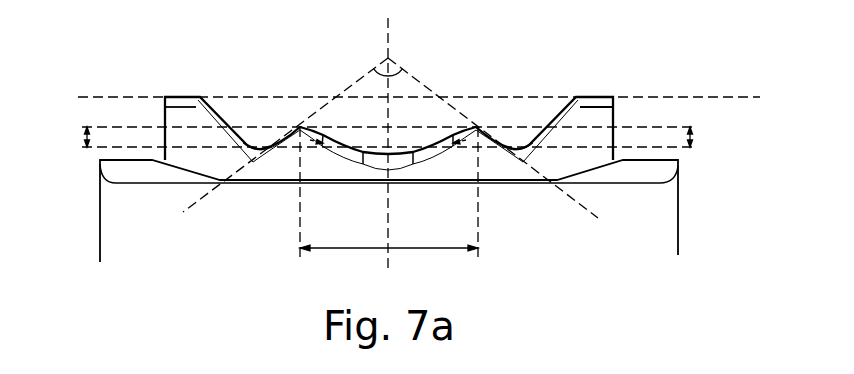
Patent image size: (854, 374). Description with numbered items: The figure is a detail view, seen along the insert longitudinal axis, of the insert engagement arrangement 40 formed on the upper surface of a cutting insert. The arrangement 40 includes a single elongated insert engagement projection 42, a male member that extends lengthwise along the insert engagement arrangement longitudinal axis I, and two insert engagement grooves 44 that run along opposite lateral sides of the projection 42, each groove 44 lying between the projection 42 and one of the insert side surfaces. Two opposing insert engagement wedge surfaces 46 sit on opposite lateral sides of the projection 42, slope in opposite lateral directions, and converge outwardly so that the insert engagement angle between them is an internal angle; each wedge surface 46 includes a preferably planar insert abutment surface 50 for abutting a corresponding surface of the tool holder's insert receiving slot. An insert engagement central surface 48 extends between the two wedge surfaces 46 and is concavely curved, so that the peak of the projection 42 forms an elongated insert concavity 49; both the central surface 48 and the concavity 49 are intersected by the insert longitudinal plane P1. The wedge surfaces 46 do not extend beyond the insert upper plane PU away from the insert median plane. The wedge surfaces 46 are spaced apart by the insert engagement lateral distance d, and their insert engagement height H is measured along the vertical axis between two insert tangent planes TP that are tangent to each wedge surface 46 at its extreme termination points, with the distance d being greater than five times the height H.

The insert engagement arrangement 40 is at (577, 73).
The insert engagement projection 42 is at (433, 62).
The insert engagement grooves 44 is at (228, 78).
The insert engagement wedge surfaces 46 is at (283, 127).
The insert engagement central surface 48 is at (342, 140).
The insert concavity 49 is at (398, 143).
The insert abutment surface 50 is at (275, 146).
The insert longitudinal plane P1 is at (388, 33).
The insert upper plane PU is at (683, 97).
The insert tangent planes TP is at (675, 127).
The insert engagement height H is at (85, 135).
The insert engagement lateral distance d is at (420, 248).
The insert engagement arrangement longitudinal axis I is at (388, 170).